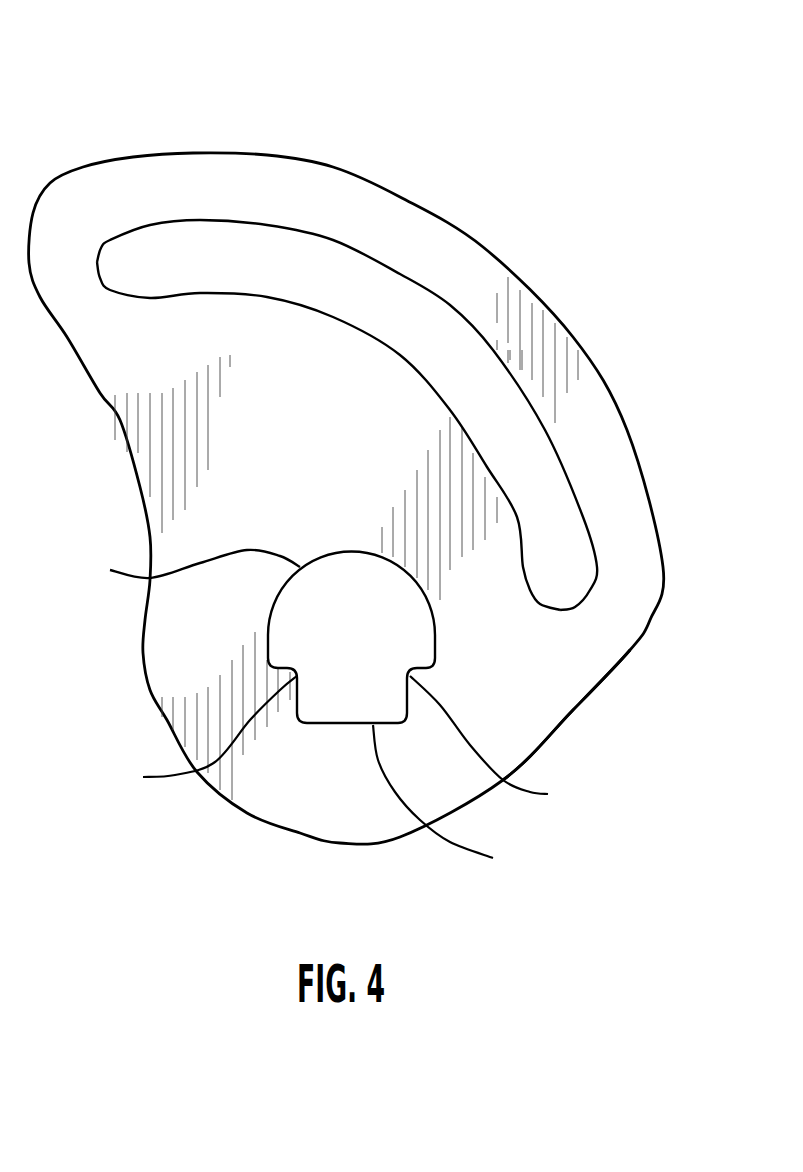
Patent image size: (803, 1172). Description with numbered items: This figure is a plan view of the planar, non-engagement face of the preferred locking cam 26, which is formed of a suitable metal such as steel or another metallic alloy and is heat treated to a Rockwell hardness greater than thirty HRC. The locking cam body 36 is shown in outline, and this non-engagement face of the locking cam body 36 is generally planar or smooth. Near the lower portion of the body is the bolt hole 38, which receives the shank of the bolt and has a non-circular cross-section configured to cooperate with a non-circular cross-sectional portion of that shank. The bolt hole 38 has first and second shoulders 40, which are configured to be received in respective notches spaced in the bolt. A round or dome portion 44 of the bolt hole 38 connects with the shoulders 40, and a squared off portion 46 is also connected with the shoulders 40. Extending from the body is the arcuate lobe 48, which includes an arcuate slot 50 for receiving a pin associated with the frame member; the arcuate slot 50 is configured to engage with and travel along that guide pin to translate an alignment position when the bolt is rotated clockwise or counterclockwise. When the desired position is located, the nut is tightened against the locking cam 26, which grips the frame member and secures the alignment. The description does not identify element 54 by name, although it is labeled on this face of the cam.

The locking cam 26 is at (162, 113).
The locking cam body 36 is at (582, 714).
The bolt hole 38 is at (351, 707).
The first and second shoulders 40 is at (345, 743).
The dome portion 44 is at (110, 570).
The squared off portion 46 is at (448, 802).
The arcuate lobe 48 is at (372, 400).
The arcuate slot 50 is at (354, 261).
The slot upper wall 54 is at (236, 230).